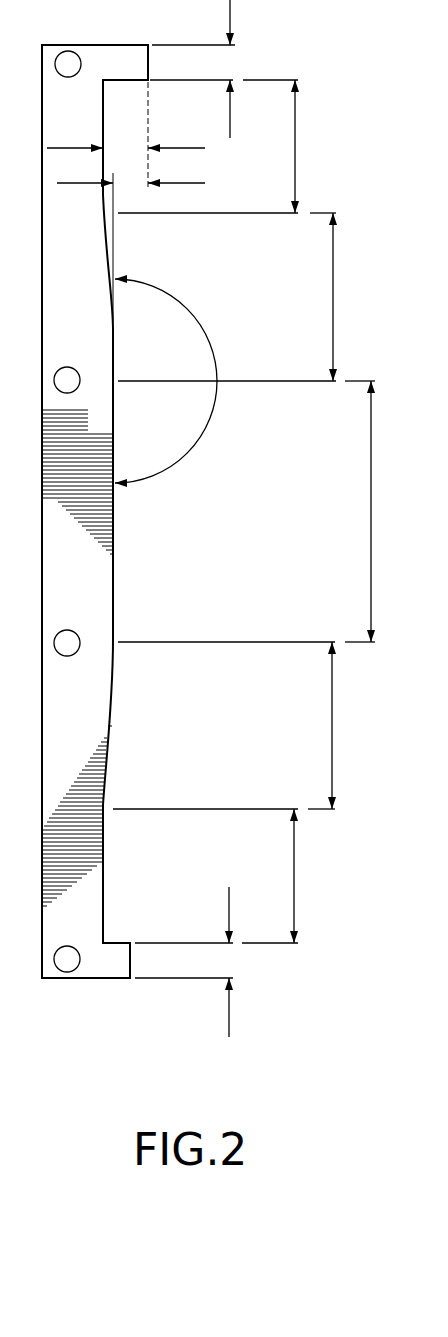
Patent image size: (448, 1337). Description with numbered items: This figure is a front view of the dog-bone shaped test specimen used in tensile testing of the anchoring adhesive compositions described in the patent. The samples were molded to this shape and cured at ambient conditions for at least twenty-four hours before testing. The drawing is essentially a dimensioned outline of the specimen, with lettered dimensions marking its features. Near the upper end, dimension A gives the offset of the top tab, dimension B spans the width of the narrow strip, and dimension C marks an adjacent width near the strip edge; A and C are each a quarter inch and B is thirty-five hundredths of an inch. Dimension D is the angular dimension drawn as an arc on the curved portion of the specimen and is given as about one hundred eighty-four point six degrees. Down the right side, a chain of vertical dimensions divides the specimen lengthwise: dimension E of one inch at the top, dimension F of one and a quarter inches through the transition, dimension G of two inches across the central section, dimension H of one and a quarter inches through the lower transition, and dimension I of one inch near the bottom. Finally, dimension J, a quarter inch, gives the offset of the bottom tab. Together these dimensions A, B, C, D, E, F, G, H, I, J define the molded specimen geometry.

The dimension A is at (226, 62).
The dimension B is at (125, 148).
The dimension C is at (128, 184).
The dimension D is at (207, 328).
The dimension E is at (296, 145).
The dimension F is at (334, 295).
The dimension G is at (372, 500).
The dimension H is at (333, 720).
The dimension I is at (295, 880).
The dimension J is at (228, 960).